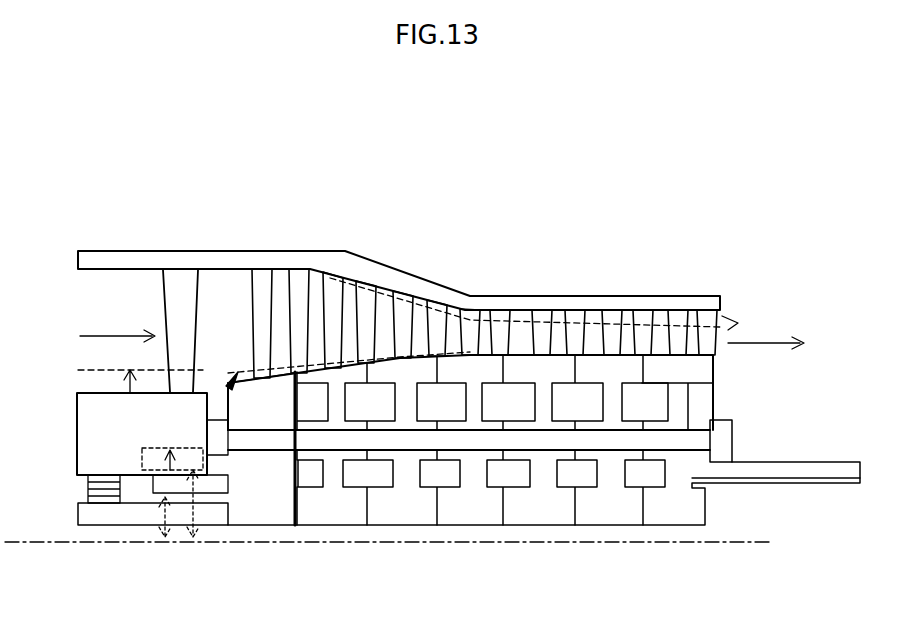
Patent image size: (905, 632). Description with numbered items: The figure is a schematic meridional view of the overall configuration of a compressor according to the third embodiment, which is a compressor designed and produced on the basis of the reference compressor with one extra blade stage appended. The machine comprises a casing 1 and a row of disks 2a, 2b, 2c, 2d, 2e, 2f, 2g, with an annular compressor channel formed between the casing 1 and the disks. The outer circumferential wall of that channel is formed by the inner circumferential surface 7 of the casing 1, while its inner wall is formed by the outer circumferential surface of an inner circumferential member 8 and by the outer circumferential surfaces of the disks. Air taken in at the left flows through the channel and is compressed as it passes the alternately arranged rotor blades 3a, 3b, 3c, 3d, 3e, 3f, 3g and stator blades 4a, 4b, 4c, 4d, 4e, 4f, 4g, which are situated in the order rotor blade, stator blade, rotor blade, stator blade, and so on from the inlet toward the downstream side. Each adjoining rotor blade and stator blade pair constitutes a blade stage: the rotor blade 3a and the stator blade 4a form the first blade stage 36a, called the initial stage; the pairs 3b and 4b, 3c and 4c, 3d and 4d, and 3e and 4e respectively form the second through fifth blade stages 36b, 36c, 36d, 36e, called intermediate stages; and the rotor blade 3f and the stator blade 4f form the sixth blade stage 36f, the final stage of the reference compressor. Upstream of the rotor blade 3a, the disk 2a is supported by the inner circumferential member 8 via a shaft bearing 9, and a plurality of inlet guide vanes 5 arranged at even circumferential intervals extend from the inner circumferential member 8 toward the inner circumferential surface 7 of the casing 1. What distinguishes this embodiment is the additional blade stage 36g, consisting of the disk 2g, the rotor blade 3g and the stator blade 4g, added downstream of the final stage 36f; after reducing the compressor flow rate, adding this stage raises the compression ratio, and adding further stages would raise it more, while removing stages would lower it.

The casing 1 is at (192, 271).
The inlet guide vanes 5 is at (182, 302).
The inner circumferential surface 7 is at (236, 283).
The inner circumferential member 8 is at (78, 407).
The shaft bearing 9 is at (85, 488).
The disk 2a is at (238, 508).
The disk 2b is at (325, 508).
The disk 2c is at (398, 508).
The disk 2d is at (472, 508).
The disk 2e is at (543, 508).
The disk 2f is at (613, 510).
The disk 2g is at (675, 513).
The rotor blade 3a is at (262, 290).
The rotor blade 3b is at (331, 293).
The rotor blade 3c is at (403, 312).
The rotor blade 3d is at (472, 342).
The rotor blade 3e is at (542, 340).
The rotor blade 3f is at (612, 342).
The rotor blade 3g is at (680, 335).
The stator blade 4a is at (300, 290).
The stator blade 4b is at (366, 302).
The stator blade 4c is at (437, 327).
The stator blade 4d is at (500, 340).
The stator blade 4e is at (575, 340).
The stator blade 4f is at (643, 340).
The stator blade 4g is at (706, 335).
The first blade stage 36a is at (258, 233).
The second blade stage 36b is at (341, 228).
The third blade stage 36c is at (438, 238).
The fourth blade stage 36d is at (505, 252).
The fifth blade stage 36e is at (578, 252).
The sixth blade stage 36f is at (649, 261).
The blade stage 36g is at (723, 256).